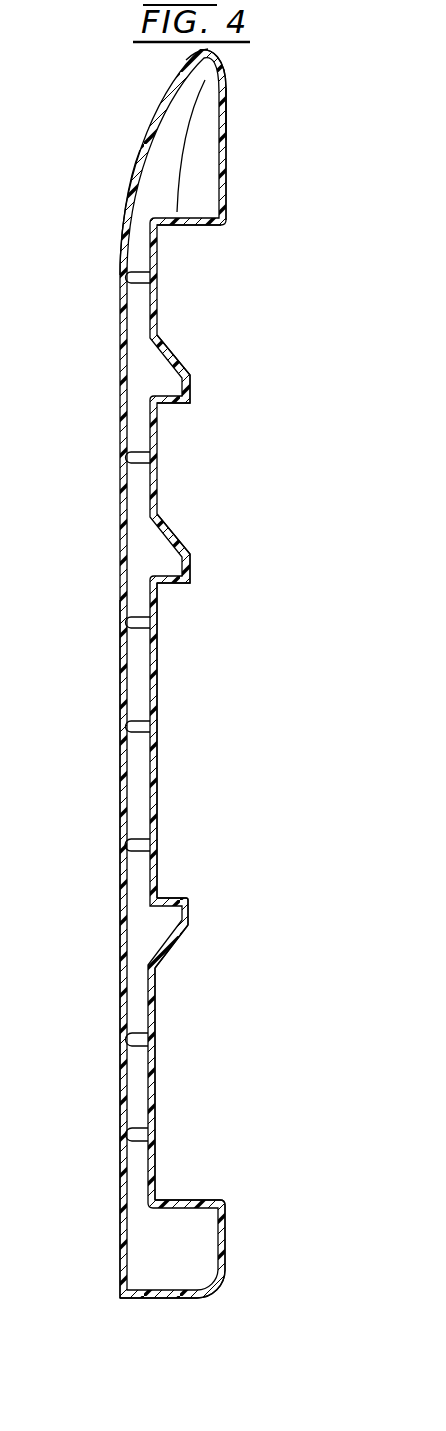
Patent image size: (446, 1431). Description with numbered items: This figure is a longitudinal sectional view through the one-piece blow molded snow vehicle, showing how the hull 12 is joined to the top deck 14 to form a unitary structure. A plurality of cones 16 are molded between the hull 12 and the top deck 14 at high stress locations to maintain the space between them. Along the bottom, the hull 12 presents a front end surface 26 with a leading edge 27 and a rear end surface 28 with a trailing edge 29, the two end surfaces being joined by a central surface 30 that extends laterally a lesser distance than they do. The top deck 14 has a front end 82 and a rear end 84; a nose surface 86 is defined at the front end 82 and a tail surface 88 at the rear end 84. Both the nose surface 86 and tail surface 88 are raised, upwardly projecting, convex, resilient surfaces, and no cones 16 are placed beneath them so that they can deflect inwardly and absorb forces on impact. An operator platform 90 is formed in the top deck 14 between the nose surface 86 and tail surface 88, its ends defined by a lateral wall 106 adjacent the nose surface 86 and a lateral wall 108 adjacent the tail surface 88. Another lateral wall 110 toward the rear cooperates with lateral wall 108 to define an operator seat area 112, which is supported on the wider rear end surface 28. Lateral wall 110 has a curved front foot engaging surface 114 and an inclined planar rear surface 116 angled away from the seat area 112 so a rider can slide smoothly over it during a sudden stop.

The hull 12 is at (144, 145).
The top deck 14 is at (167, 346).
The cones 16 is at (143, 458).
The front end surface 26 is at (116, 238).
The leading edge 27 is at (192, 52).
The rear end surface 28 is at (116, 1168).
The trailing edge 29 is at (128, 1296).
The central surface 30 is at (119, 777).
The front end 82 is at (230, 76).
The rear end 84 is at (222, 1288).
The nose surface 86 is at (226, 147).
The tail surface 88 is at (226, 1233).
The operator platform 90 is at (161, 698).
The lateral wall 106 is at (197, 223).
The lateral wall 108 is at (190, 1200).
The lateral wall 110 is at (190, 903).
The operator seat area 112 is at (158, 1075).
The curved front foot engaging surface 114 is at (172, 896).
The inclined planar rear surface 116 is at (178, 945).